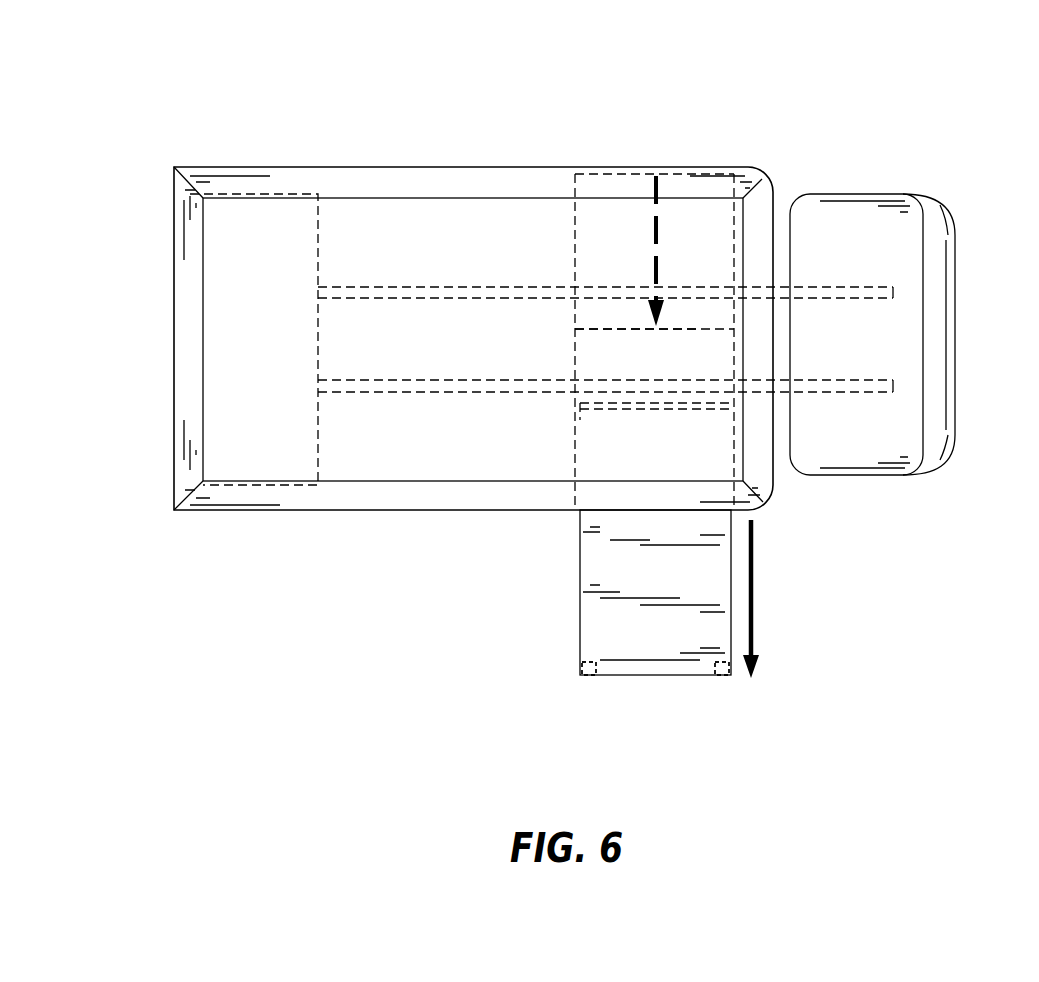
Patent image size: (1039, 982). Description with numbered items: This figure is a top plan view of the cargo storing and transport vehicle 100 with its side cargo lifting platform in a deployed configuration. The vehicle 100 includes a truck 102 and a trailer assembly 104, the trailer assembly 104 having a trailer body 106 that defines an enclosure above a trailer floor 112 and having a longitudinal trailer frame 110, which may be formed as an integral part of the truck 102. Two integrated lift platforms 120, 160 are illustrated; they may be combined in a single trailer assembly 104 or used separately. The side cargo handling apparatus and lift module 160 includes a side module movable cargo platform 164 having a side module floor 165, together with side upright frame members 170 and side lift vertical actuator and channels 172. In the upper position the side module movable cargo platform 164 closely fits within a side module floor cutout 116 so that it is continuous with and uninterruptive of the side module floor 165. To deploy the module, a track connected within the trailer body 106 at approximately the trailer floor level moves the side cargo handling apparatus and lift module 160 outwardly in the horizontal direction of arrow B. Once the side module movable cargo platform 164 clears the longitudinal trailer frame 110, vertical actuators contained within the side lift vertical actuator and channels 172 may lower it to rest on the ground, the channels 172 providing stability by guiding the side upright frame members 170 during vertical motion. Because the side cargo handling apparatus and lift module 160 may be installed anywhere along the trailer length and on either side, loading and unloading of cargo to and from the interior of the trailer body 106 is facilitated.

The cargo storing and transport vehicle 100 is at (953, 145).
The truck 102 is at (930, 445).
The trailer assembly 104 is at (196, 153).
The trailer body 106 is at (390, 187).
The longitudinal trailer frame 110 is at (443, 297).
The trailer floor 112 is at (418, 412).
The side module floor cutout 116 is at (635, 408).
The integrated lift platform 120 is at (168, 343).
The side cargo handling apparatus and lift module 160 is at (655, 692).
The side module movable cargo platform 164 is at (646, 630).
The side module floor 165 is at (628, 355).
The side upright frame member 170 is at (752, 720).
The side lift vertical actuator and channel 172 is at (655, 668).
The arrow B is at (752, 598).